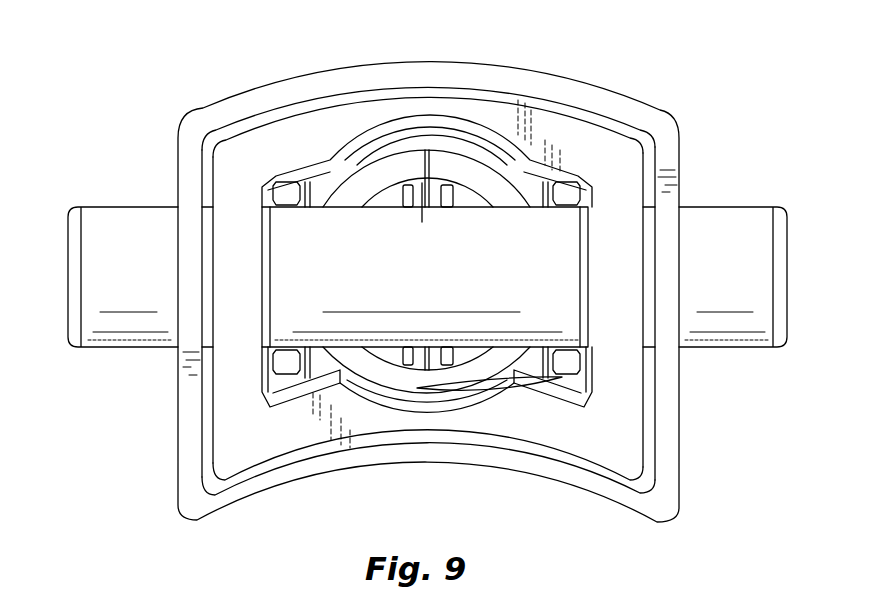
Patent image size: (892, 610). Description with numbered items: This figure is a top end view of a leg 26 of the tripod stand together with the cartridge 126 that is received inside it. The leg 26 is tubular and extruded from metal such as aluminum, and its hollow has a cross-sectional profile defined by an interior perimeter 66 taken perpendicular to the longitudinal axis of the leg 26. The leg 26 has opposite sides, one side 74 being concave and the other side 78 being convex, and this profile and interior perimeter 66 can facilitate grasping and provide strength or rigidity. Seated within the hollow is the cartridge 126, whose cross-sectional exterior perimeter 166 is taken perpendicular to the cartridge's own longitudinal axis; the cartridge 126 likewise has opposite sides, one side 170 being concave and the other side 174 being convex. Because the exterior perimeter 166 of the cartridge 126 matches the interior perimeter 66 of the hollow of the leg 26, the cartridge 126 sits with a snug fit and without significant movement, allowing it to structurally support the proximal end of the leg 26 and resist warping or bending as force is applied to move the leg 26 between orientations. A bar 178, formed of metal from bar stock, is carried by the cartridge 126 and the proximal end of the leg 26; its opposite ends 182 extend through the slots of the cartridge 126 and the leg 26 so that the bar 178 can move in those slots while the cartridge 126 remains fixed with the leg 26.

The leg 26 is at (668, 132).
The convex side 78 is at (563, 88).
The concave side 74 is at (565, 472).
The exterior perimeter 166 is at (210, 426).
The interior perimeter 66 is at (657, 433).
The convex side 174 is at (473, 97).
The concave side 170 is at (505, 440).
The opposite ends 182 is at (102, 222).
The bar 178 is at (300, 232).
The cartridge 126 is at (293, 120).